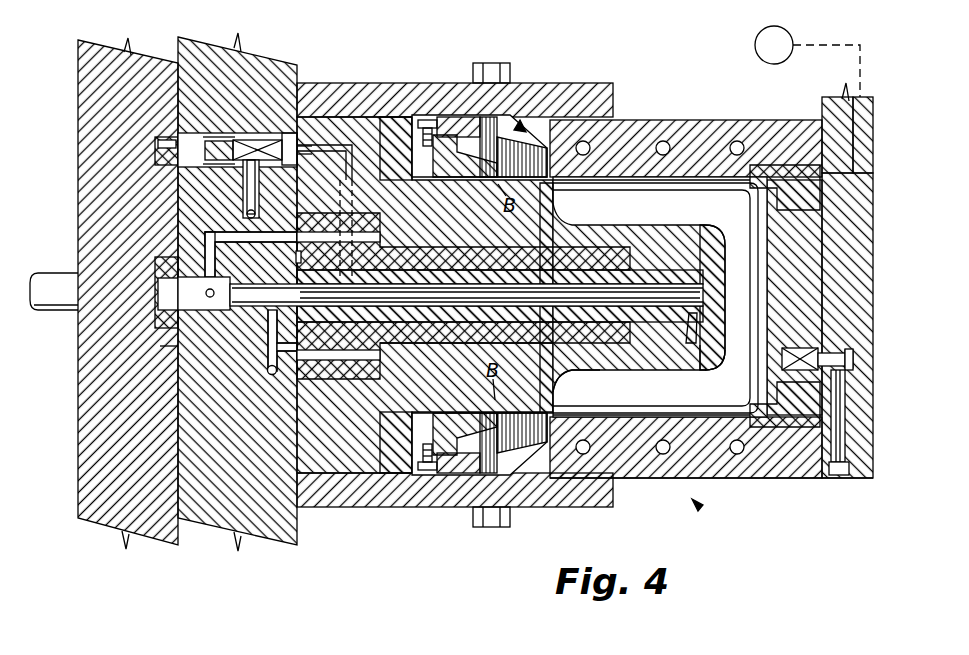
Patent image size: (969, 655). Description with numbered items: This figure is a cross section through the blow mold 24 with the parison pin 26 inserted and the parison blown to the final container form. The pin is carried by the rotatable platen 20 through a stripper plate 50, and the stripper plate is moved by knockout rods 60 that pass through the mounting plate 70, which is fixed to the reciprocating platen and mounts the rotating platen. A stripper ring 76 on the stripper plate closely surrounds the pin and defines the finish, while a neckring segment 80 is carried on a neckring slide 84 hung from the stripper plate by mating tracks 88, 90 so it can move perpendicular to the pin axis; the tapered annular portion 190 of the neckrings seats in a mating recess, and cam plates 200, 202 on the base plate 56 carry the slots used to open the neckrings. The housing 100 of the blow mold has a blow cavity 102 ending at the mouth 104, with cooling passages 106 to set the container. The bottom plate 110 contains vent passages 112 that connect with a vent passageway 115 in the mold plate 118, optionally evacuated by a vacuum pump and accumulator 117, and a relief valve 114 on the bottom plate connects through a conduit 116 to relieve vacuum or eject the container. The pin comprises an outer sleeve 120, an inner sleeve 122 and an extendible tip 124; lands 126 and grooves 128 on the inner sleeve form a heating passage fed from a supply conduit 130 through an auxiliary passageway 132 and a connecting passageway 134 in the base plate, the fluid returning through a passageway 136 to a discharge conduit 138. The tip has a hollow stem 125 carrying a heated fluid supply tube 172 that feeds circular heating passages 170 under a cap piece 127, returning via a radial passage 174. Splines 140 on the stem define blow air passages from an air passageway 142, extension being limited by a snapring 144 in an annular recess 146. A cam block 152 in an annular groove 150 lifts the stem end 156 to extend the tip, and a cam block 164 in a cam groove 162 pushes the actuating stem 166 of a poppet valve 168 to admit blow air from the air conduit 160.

The rotatable platen 20 is at (220, 512).
The blow mold 24 is at (696, 503).
The parison pin 26 is at (686, 211).
The stripper plate 50 is at (386, 115).
The base plate 56 is at (313, 117).
The knockout rod 60 is at (62, 290).
The mounting plate 70 is at (100, 522).
The stripper ring 76 is at (468, 168).
The neckring segment 80 is at (550, 98).
The neckring slide 84 is at (503, 117).
The mating track 88 is at (432, 118).
The mating track 90 is at (430, 475).
The housing 100 is at (797, 480).
The blow cavity 102 is at (688, 418).
The mouth 104 is at (645, 136).
The cooling passages 106 is at (742, 140).
The bottom plate 110 is at (802, 248).
The vent passages 112 is at (794, 168).
The relief valve 114 is at (803, 334).
The vent passageway 115 is at (840, 96).
The conduit 116 is at (846, 445).
The vacuum pump and accumulator 117 is at (783, 36).
The mold plate 118 is at (862, 362).
The outer sleeve 120 is at (551, 223).
The inner sleeve 122 is at (599, 345).
The extendible tip 124 is at (700, 362).
The hollow stem 125 is at (422, 322).
The lands 126 is at (472, 254).
The cap piece 127 is at (720, 346).
The grooves 128 is at (520, 252).
The supply conduit 130 is at (211, 308).
The auxiliary passageway 132 is at (218, 216).
The fluid passage 134 is at (310, 234).
The passageway 136 is at (340, 360).
The discharge conduit 138 is at (268, 376).
The splines 140 is at (447, 323).
The air passageway 142 is at (335, 199).
The snapring 144 is at (296, 256).
The annular recess 146 is at (270, 333).
The annular groove 150 is at (157, 262).
The cam block 152 is at (155, 284).
The end 156 is at (165, 340).
The air conduit 160 is at (247, 210).
The cam groove 162 is at (165, 140).
The cam block 164 is at (155, 153).
The actuating stem 166 is at (220, 141).
The poppet valve 168 is at (262, 140).
The circular heating passages 170 is at (708, 270).
The heated fluid supply tube 172 is at (637, 292).
The radial passage 174 is at (687, 333).
The tapered annular portion 190 is at (604, 123).
The cam plate 200 is at (603, 85).
The cam plate 202 is at (612, 503).